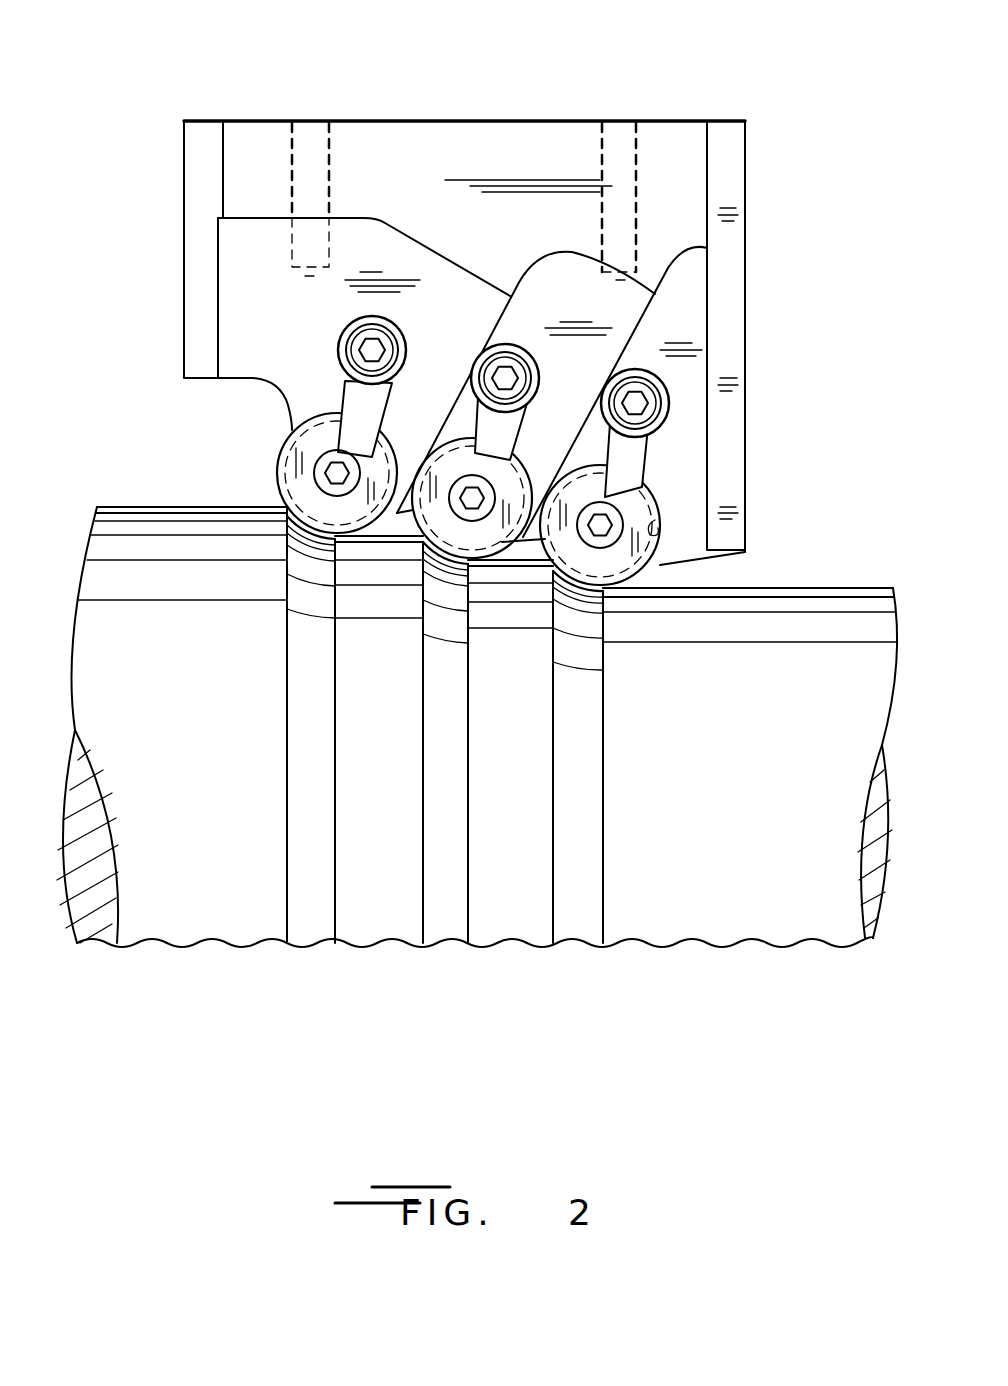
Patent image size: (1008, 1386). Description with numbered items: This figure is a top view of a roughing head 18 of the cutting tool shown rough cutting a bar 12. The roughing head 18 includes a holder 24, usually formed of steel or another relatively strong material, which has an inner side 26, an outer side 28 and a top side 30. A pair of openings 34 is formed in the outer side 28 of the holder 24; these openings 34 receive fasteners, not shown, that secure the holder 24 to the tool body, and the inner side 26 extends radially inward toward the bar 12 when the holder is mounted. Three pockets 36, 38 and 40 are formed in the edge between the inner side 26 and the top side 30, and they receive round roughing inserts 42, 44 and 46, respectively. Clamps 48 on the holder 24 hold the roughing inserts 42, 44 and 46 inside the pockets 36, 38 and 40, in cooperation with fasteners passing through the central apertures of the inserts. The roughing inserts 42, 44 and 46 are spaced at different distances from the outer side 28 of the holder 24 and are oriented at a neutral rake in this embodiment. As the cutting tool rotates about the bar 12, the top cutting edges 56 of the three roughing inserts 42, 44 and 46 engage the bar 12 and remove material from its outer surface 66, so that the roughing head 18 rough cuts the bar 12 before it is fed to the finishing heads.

The bar 12 is at (477, 694).
The roughing head 18 is at (448, 367).
The holder 24 is at (533, 157).
The inner side 26 is at (690, 553).
The outer side 28 is at (410, 122).
The top side 30 is at (693, 300).
The openings 34 is at (293, 160).
The pocket 36 is at (305, 437).
The pocket 38 is at (525, 535).
The pocket 40 is at (648, 540).
The roughing insert 42 is at (287, 452).
The roughing insert 44 is at (457, 530).
The roughing insert 46 is at (643, 505).
The clamps 48 is at (358, 397).
The top cutting edge 56 is at (283, 486).
The outer surface 66 is at (150, 548).